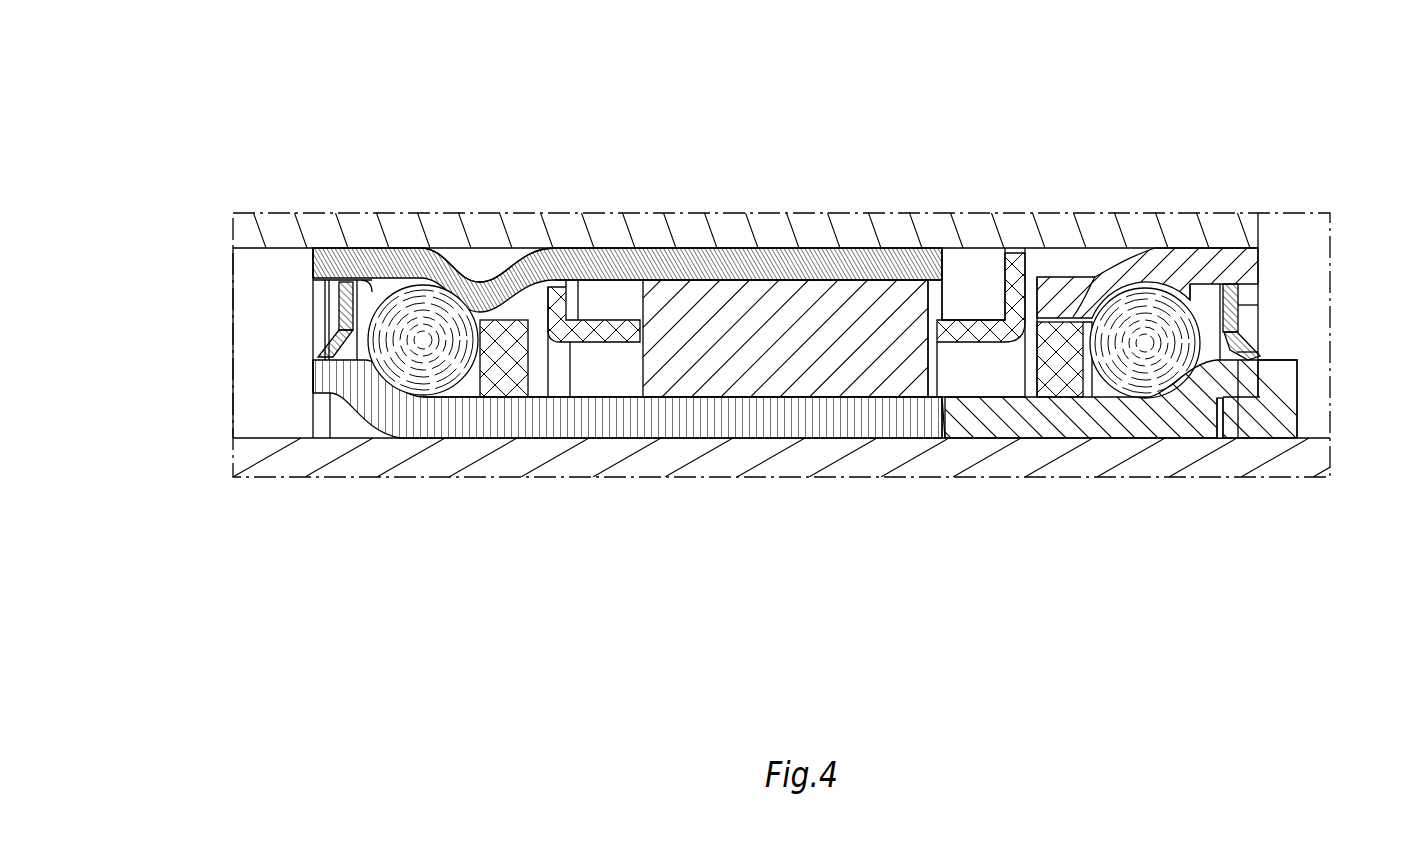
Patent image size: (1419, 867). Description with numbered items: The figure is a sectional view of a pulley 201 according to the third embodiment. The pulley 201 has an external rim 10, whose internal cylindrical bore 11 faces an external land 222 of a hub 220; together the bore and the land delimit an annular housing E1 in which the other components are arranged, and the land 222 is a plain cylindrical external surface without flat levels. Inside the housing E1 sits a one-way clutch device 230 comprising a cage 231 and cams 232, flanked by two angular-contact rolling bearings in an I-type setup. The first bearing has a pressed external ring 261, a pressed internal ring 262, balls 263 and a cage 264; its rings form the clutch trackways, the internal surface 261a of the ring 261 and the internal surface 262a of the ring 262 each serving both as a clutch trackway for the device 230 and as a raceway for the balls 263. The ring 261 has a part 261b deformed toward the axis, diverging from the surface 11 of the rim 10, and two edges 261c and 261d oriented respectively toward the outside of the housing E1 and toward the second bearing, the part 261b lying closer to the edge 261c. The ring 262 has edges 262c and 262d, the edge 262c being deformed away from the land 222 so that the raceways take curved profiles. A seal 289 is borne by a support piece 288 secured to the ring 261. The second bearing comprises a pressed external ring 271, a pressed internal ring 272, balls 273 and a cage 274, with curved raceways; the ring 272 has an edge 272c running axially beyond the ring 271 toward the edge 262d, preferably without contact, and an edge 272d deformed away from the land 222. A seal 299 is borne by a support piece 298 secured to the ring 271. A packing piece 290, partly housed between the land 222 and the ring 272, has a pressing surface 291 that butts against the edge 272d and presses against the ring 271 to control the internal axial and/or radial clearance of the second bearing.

The pulley 201 is at (252, 138).
The external rim 10 is at (373, 234).
The hub 220 is at (283, 462).
The external land 222 is at (289, 434).
The external ring 261 is at (572, 262).
The internal surface 261a is at (720, 285).
The part 261b is at (486, 283).
The edge 261c is at (306, 263).
The edge 261d is at (948, 252).
The support piece 288 is at (330, 310).
The seal 289 is at (330, 347).
The internal ring 262 is at (611, 413).
The internal surface 262a is at (776, 394).
The edge 262c is at (306, 375).
The edge 262d is at (949, 421).
The balls 263 is at (423, 343).
The cage 264 is at (505, 384).
The internal cylindrical bore 11 is at (657, 280).
The cams 232 is at (893, 313).
The device 230 is at (962, 266).
The cage 231 is at (1030, 268).
The housing E1 is at (966, 375).
The external ring 271 is at (1152, 268).
The cage 274 is at (1062, 385).
The balls 273 is at (1145, 345).
The internal ring 272 is at (1177, 408).
The edge 272c is at (938, 410).
The edge 272d is at (1270, 389).
The packing piece 290 is at (1262, 440).
The support piece 298 is at (1240, 306).
The seal 299 is at (1246, 347).
The pressing surface 291 is at (1258, 356).